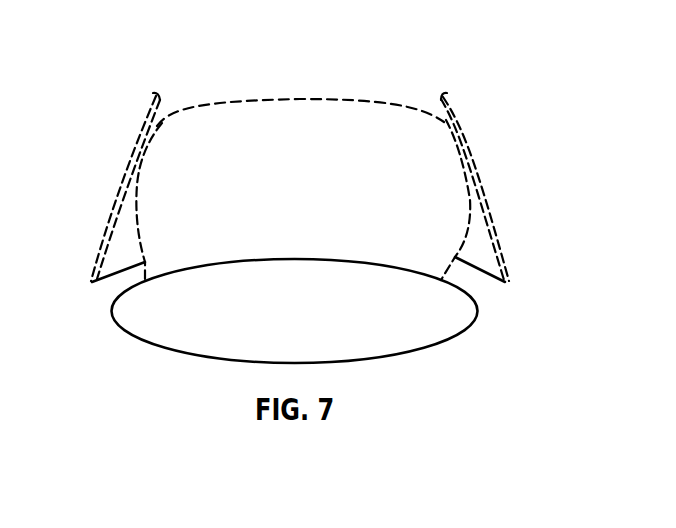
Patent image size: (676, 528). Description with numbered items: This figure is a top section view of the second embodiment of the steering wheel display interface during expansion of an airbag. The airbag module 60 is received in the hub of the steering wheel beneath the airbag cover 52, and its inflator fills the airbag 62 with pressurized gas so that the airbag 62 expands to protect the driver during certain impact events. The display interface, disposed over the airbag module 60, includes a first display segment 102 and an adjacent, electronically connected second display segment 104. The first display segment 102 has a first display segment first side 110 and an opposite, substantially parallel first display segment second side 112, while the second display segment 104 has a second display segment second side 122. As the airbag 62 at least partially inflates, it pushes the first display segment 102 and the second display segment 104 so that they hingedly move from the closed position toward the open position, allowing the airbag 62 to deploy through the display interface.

The airbag cover 52 is at (100, 282).
The airbag module 60 is at (433, 366).
The airbag 62 is at (333, 98).
The first display segment 102 is at (108, 192).
The second display segment 104 is at (483, 178).
The first display segment first side 110 is at (94, 281).
The first display segment second side 112 is at (156, 94).
The second display segment second side 122 is at (444, 95).